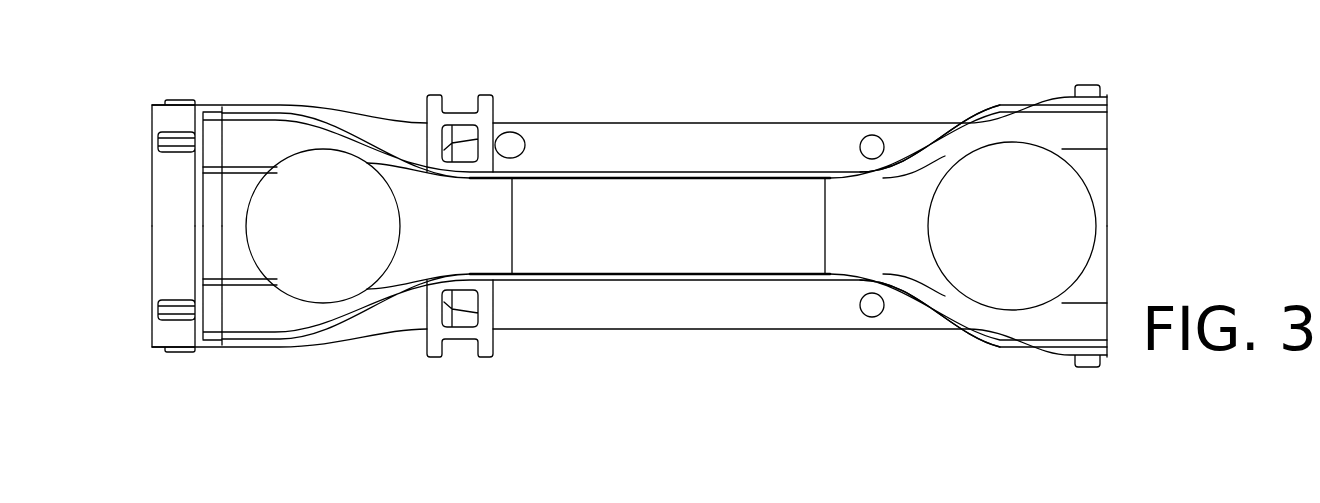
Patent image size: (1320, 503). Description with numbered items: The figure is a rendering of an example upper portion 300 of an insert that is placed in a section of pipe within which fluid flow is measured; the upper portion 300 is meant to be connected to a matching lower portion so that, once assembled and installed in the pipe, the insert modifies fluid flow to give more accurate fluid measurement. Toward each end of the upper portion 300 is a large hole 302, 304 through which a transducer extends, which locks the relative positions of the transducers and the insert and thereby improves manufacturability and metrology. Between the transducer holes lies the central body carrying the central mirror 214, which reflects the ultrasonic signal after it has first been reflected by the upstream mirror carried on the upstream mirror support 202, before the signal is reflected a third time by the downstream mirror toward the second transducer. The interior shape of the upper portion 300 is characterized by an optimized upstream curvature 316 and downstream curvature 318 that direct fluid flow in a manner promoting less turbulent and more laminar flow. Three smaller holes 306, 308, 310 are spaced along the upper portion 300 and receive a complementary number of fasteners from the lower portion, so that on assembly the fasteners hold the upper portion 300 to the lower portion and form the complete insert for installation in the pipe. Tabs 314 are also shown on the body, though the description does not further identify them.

The upper portion 300 is at (993, 81).
The central mirror 214 is at (712, 188).
The upstream mirror support 202 is at (224, 502).
The hole 302 is at (252, 193).
The hole 304 is at (1088, 197).
The hole 306 is at (513, 133).
The hole 308 is at (864, 135).
The hole 310 is at (870, 316).
The retention tabs 314 is at (462, 118).
The upstream curvature 316 is at (362, 138).
The downstream curvature 318 is at (945, 148).